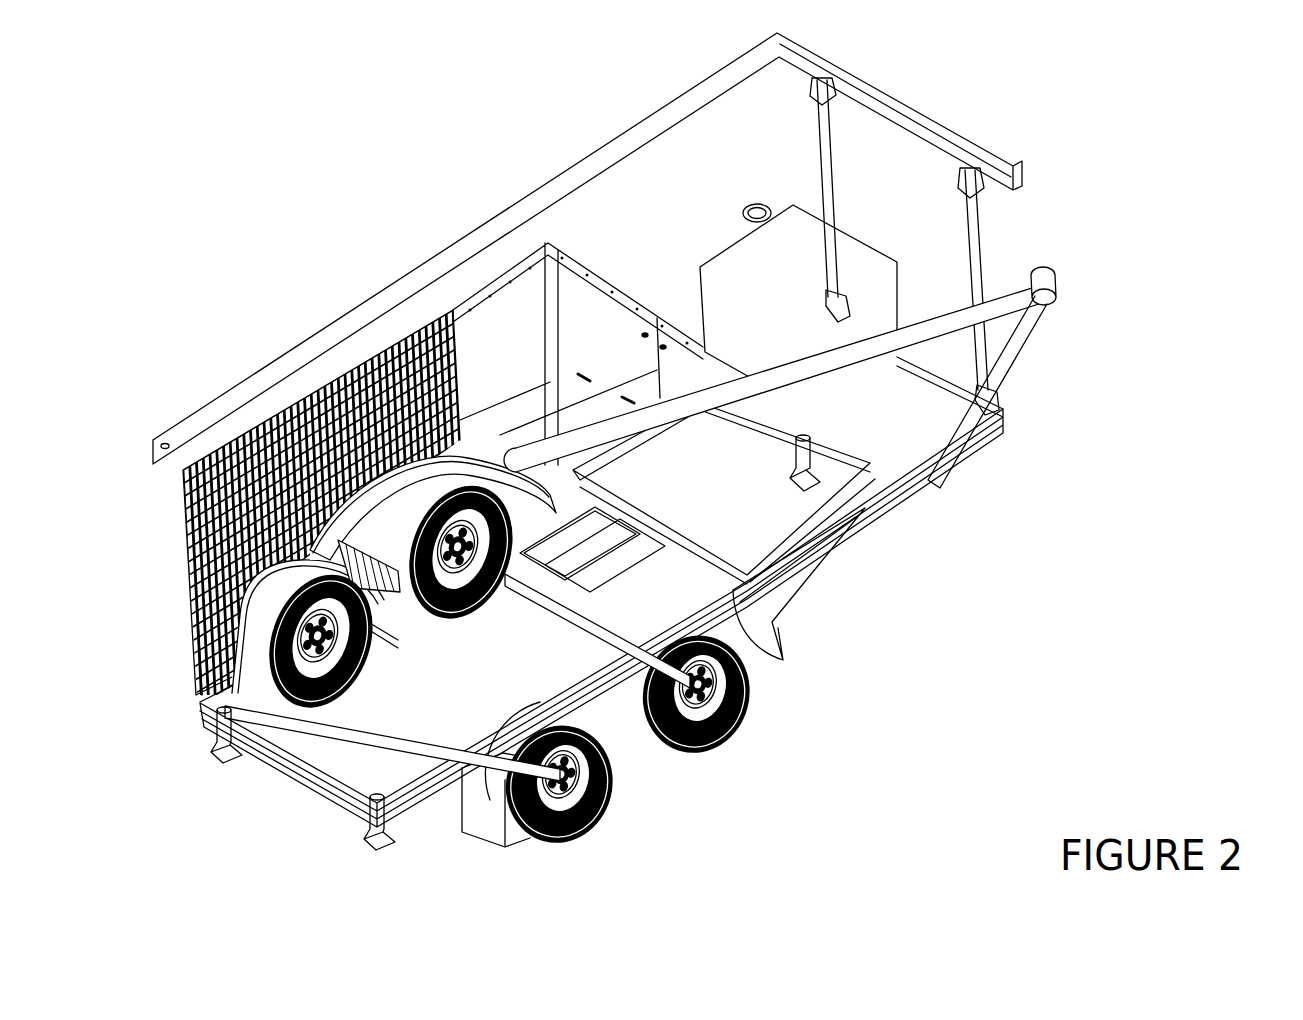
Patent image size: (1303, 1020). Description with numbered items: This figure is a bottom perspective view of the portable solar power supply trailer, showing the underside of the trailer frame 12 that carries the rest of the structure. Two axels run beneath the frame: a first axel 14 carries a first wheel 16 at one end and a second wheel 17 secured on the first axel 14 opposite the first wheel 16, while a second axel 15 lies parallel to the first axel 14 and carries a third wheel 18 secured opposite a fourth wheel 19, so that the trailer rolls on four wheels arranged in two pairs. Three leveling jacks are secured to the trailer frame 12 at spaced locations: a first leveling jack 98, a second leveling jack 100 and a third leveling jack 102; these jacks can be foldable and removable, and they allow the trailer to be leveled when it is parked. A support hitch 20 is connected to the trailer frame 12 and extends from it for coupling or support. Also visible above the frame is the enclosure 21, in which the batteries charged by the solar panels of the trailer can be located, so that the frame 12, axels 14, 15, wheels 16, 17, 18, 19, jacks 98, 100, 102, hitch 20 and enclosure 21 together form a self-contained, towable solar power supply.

The trailer frame 12 is at (1003, 415).
The first axel 14 is at (432, 708).
The second axel 15 is at (576, 620).
The first wheel 16 is at (530, 830).
The second wheel 17 is at (282, 690).
The third wheel 18 is at (668, 735).
The fourth wheel 19 is at (430, 596).
The support hitch 20 is at (1055, 296).
The enclosure 21 is at (493, 323).
The first leveling jack 98 is at (805, 492).
The second leveling jack 100 is at (230, 762).
The third leveling jack 102 is at (383, 850).